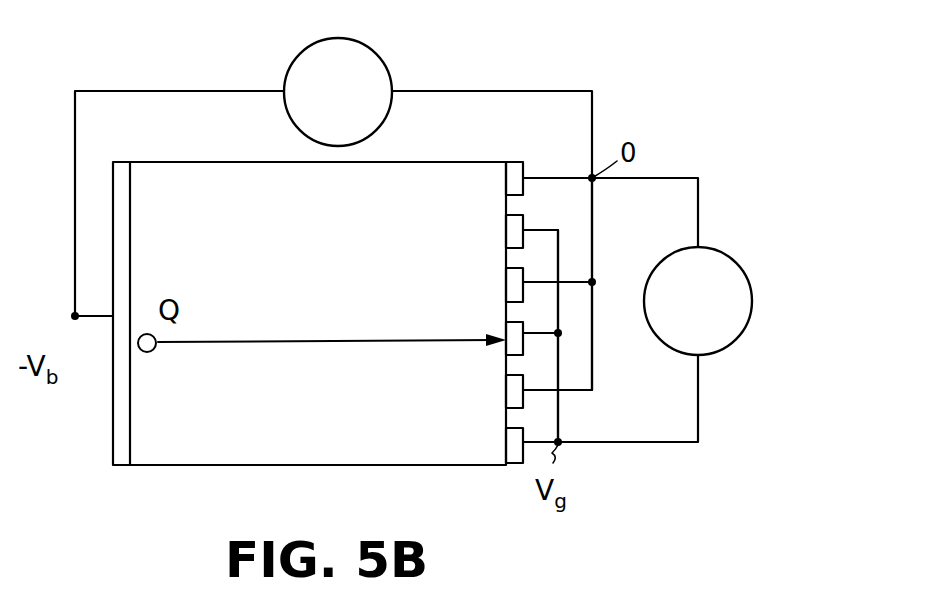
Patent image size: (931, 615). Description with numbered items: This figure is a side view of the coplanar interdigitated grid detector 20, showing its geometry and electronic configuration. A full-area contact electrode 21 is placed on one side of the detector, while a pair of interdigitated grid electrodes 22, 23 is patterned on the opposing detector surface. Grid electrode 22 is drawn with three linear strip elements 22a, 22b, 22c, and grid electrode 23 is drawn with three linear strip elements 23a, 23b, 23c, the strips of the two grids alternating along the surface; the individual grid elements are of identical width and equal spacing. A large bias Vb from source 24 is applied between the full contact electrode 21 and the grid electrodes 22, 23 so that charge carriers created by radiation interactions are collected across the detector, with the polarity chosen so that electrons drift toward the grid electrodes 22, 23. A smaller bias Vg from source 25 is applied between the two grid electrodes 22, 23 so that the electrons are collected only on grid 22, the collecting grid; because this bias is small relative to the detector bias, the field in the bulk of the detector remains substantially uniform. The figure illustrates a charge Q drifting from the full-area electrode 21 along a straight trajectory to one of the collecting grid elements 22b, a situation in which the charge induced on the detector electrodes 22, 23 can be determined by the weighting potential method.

The coplanar interdigitated grid detector 20 is at (706, 134).
The full-area contact electrode 21 is at (113, 450).
The grid electrode 22 is at (560, 422).
The linear strip element 22a is at (506, 232).
The linear strip element 22b is at (506, 335).
The linear strip element 22c is at (506, 445).
The grid electrode 23 is at (592, 242).
The linear strip element 23a is at (506, 183).
The linear strip element 23b is at (506, 285).
The linear strip element 23c is at (506, 392).
The bias source 24 is at (380, 60).
The bias source 25 is at (738, 262).